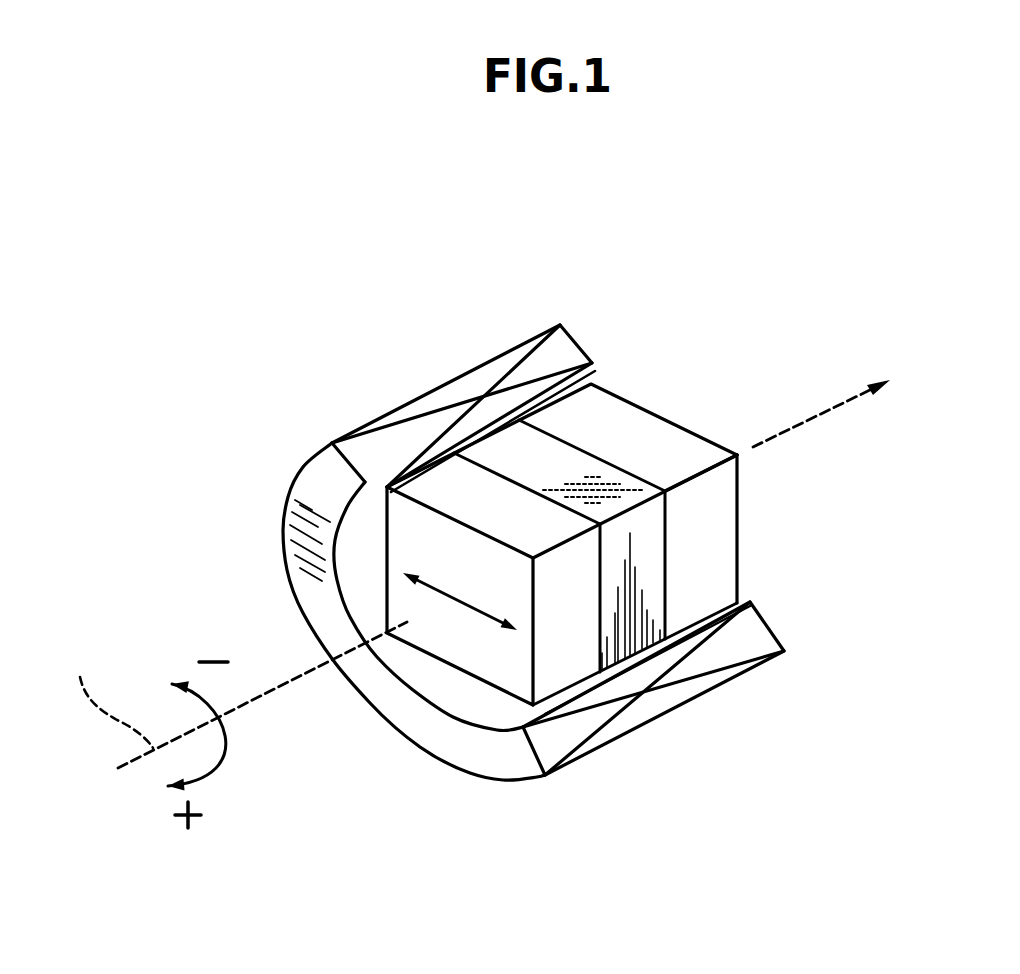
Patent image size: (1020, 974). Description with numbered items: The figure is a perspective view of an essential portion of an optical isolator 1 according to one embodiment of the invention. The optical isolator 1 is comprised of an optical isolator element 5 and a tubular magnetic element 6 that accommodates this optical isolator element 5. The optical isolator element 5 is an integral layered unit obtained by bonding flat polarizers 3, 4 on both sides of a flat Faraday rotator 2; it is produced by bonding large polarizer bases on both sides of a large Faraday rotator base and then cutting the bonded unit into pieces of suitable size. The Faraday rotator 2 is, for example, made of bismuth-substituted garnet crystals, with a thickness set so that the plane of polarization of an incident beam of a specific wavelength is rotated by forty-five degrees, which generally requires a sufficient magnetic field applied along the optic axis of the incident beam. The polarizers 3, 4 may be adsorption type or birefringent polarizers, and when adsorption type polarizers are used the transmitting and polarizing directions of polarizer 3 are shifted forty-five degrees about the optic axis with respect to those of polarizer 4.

The optical isolator 1 is at (762, 530).
The Faraday rotator 2 is at (567, 471).
The polarizer 3 is at (482, 494).
The polarizer 4 is at (653, 455).
The optical isolator element 5 is at (815, 370).
The magnetic element 6 is at (762, 633).